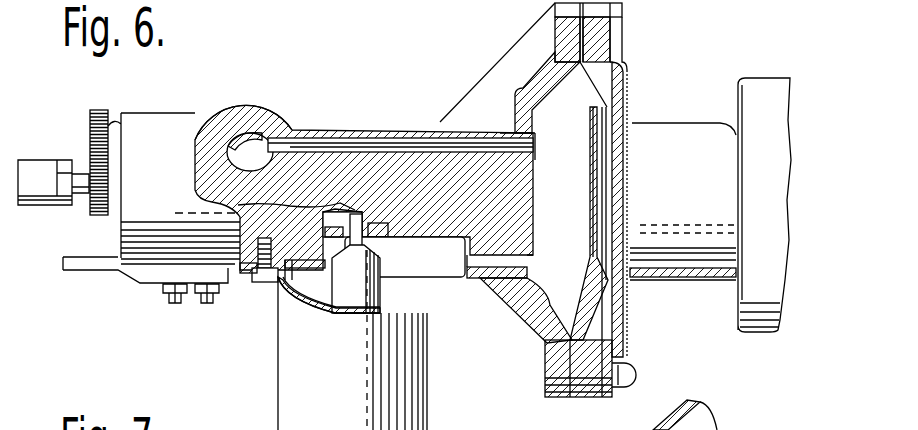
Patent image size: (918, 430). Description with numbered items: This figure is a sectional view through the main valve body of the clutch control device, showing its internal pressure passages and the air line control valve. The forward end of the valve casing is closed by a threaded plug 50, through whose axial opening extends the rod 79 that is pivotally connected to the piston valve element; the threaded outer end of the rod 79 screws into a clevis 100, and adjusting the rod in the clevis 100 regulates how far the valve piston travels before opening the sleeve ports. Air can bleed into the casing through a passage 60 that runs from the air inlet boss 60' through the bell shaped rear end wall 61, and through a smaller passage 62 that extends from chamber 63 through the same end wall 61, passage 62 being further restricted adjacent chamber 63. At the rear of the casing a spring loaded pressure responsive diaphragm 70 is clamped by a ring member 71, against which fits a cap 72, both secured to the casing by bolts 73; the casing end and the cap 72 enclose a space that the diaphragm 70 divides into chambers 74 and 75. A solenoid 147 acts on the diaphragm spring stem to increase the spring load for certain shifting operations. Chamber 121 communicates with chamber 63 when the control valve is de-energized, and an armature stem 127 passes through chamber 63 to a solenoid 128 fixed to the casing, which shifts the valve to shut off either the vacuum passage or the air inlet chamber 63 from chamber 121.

The threaded plug 50 is at (120, 256).
The passage 60 is at (400, 126).
The air inlet boss 60' is at (252, 122).
The bell shaped rear end wall 61 is at (537, 87).
The passage 62 is at (472, 265).
The chamber 63 is at (450, 262).
The diaphragm 70 is at (592, 318).
The ring member 71 is at (590, 372).
The cap 72 is at (625, 300).
The bolts 73 is at (627, 372).
The chamber 74 is at (548, 297).
The chamber 75 is at (594, 336).
The rod 79 is at (79, 205).
The clevis 100 is at (43, 207).
The chamber 121 is at (350, 212).
The armature stem 127 is at (362, 215).
The solenoid 128 is at (425, 375).
The solenoid 147 is at (737, 322).